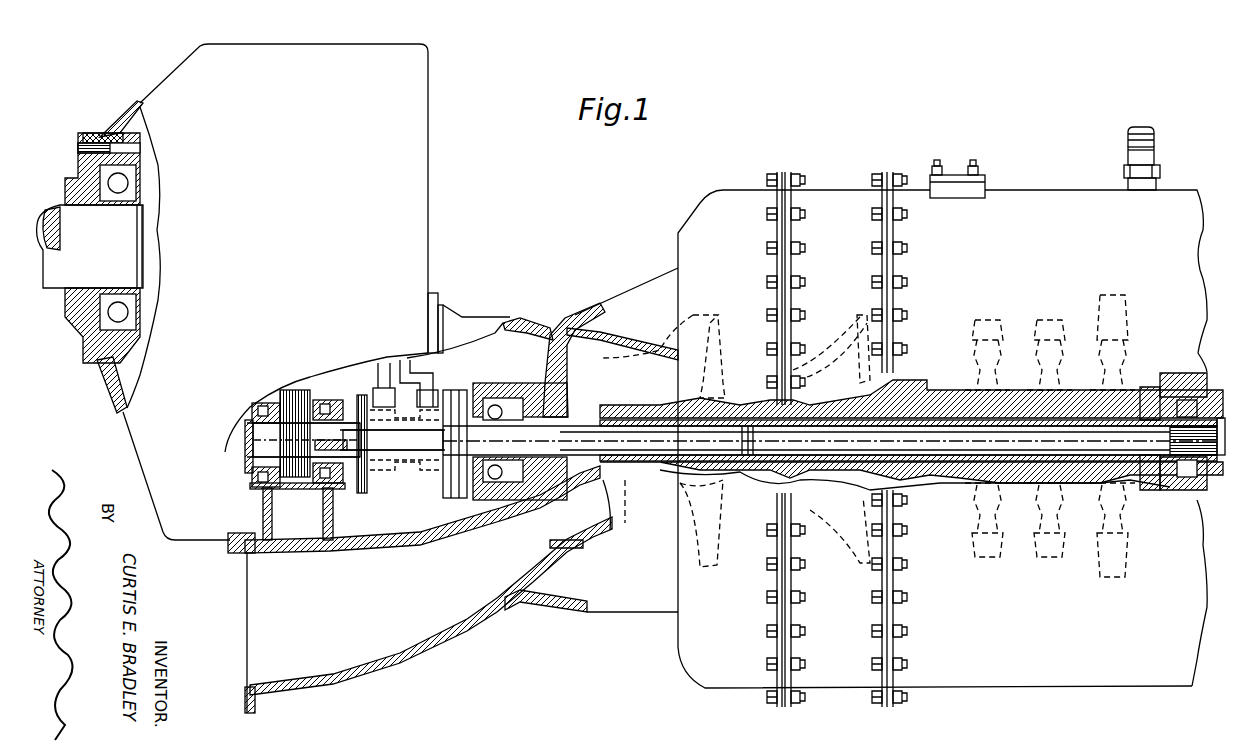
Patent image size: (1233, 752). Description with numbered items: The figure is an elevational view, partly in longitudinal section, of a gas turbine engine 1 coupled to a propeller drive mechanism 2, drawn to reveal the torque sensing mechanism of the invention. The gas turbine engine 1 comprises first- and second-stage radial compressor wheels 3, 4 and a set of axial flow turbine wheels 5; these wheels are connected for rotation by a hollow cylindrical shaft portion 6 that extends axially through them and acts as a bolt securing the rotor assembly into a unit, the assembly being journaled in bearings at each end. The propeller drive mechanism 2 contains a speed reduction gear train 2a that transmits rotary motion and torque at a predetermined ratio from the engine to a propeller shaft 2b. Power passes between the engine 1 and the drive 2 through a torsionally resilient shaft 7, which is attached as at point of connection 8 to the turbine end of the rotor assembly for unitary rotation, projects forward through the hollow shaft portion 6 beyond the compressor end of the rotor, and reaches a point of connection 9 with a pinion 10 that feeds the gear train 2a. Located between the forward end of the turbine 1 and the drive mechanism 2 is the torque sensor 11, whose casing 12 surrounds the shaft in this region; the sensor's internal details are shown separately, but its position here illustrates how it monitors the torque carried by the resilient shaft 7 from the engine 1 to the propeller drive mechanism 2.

The gas turbine engine 1 is at (1023, 189).
The propeller drive mechanism 2 is at (429, 92).
The speed reduction gear train 2a is at (316, 384).
The propeller shaft 2b is at (125, 248).
The first-stage radial compressor wheel 3 is at (716, 317).
The second-stage radial compressor wheel 4 is at (858, 317).
The axial flow turbine wheels 5 is at (1098, 300).
The hollow cylindrical shaft portion 6 is at (933, 418).
The torsionally resilient shaft 7 is at (930, 447).
The point of connection 8 is at (1187, 450).
The point of connection 9 is at (253, 427).
The pinion 10 is at (293, 473).
The torque sensor 11 is at (398, 484).
The casing 12 is at (378, 480).